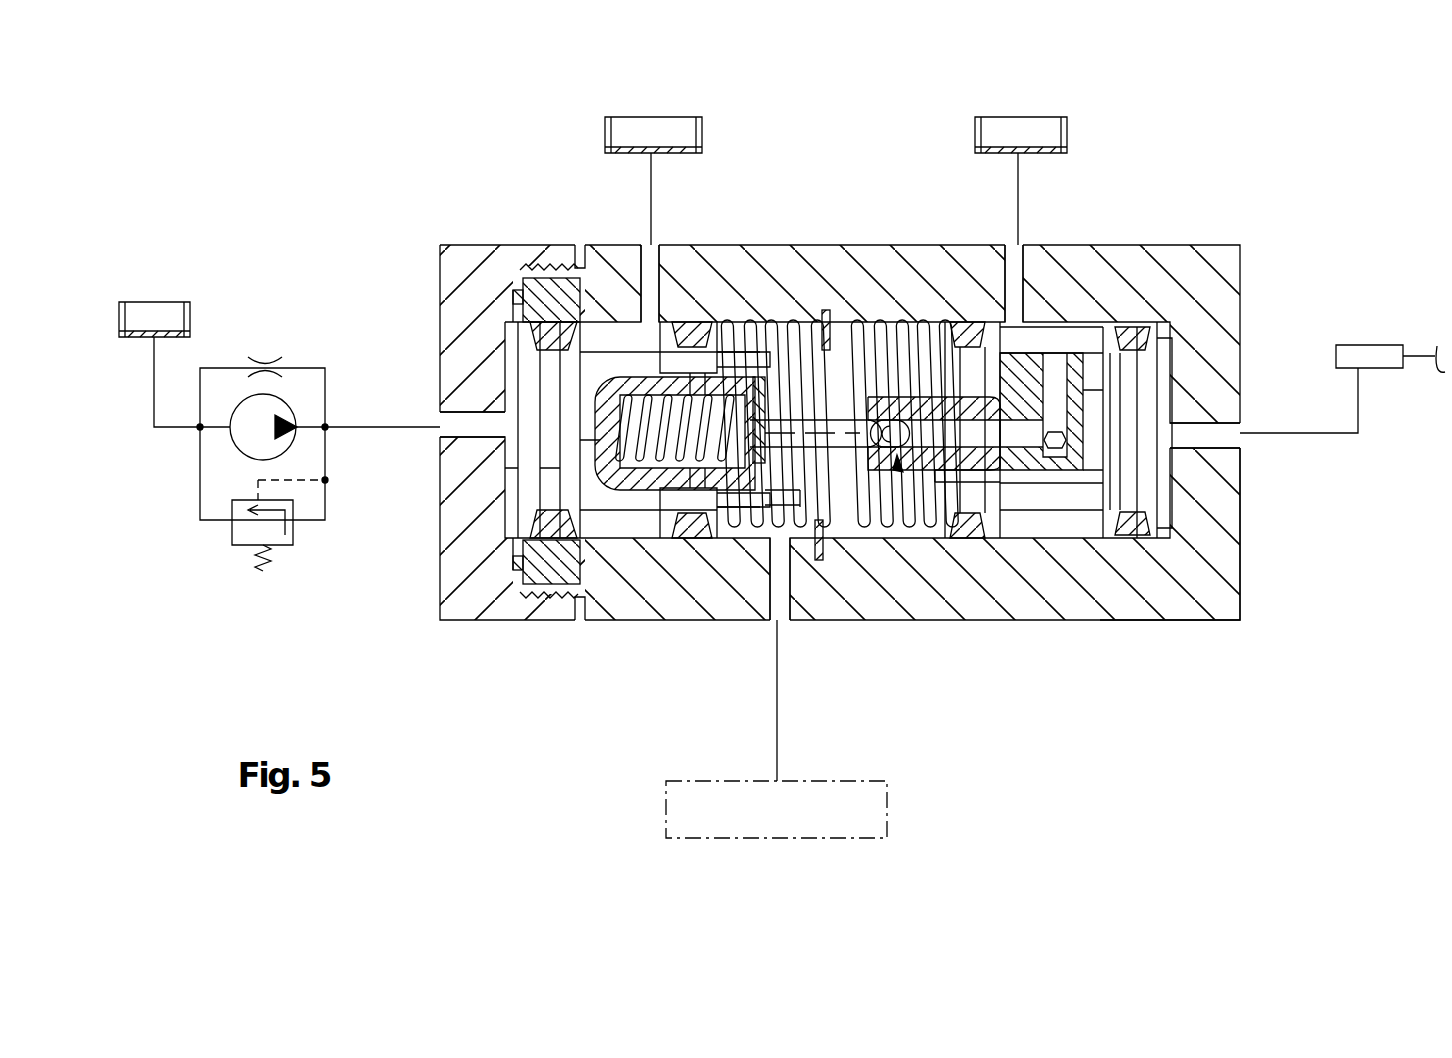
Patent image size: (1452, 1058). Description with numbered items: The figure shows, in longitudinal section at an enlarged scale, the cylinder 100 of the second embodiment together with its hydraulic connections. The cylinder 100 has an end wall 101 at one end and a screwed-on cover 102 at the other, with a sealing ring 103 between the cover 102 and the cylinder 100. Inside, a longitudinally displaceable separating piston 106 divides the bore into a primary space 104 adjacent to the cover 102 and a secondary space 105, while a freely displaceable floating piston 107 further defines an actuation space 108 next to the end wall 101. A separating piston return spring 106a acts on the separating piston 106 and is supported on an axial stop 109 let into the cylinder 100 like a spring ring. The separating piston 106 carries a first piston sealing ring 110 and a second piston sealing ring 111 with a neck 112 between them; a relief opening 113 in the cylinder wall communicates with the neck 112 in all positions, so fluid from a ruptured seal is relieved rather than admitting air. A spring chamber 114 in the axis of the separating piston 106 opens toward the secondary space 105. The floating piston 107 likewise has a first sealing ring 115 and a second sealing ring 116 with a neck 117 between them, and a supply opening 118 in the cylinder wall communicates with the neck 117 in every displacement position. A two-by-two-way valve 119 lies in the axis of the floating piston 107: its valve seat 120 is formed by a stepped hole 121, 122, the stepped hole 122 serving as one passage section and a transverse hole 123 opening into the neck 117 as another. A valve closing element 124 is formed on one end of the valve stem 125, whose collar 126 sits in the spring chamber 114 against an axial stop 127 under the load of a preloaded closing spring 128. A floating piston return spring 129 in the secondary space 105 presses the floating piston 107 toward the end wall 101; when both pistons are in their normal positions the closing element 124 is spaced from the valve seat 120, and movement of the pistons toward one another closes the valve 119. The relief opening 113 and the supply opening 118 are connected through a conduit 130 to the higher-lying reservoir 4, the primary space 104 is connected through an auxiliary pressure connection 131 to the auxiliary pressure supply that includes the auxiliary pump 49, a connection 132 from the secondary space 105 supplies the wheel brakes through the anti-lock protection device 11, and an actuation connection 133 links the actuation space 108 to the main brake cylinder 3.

The main brake cylinder 3 is at (1336, 357).
The reservoir 4 is at (178, 320).
The anti-lock protection device 11 is at (880, 836).
The auxiliary pump 49 is at (282, 405).
The cylinder 100 is at (590, 602).
The end wall 101 is at (1215, 495).
The cover 102 is at (468, 262).
The sealing ring 103 is at (515, 290).
The primary space 104 is at (500, 516).
The secondary space 105 is at (730, 492).
The separating piston 106 is at (600, 535).
The separating piston return spring 106a is at (838, 530).
The floating piston 107 is at (1068, 500).
The actuation space 108 is at (1228, 552).
The axial stop 109 is at (826, 312).
The first piston sealing ring 110 is at (535, 598).
The second piston sealing ring 111 is at (698, 530).
The neck 112 is at (600, 340).
The relief opening 113 is at (645, 300).
The spring chamber 114 is at (680, 385).
The first sealing ring 115 is at (1135, 537).
The second sealing ring 116 is at (965, 540).
The neck 117 is at (1028, 522).
The supply opening 118 is at (1020, 320).
The two-by-two-way valve 119 is at (922, 484).
The valve seat 120 is at (905, 330).
The stepped hole 121 is at (870, 395).
The stepped hole 122 is at (962, 322).
The transverse hole 123 is at (1055, 352).
The valve closing element 124 is at (935, 455).
The valve stem 125 is at (906, 448).
The collar 126 is at (758, 535).
The axial stop 127 is at (815, 532).
The closing spring 128 is at (655, 540).
The floating piston return spring 129 is at (903, 472).
The conduit 130 is at (652, 190).
The auxiliary pressure connection 131 is at (432, 440).
The connection 132 is at (787, 608).
The actuation connection 133 is at (1238, 450).